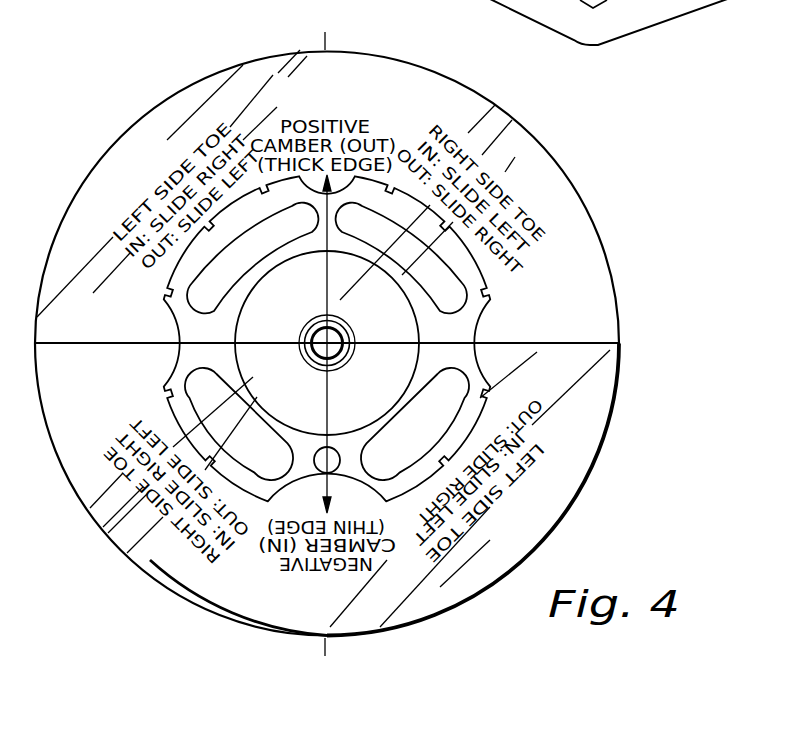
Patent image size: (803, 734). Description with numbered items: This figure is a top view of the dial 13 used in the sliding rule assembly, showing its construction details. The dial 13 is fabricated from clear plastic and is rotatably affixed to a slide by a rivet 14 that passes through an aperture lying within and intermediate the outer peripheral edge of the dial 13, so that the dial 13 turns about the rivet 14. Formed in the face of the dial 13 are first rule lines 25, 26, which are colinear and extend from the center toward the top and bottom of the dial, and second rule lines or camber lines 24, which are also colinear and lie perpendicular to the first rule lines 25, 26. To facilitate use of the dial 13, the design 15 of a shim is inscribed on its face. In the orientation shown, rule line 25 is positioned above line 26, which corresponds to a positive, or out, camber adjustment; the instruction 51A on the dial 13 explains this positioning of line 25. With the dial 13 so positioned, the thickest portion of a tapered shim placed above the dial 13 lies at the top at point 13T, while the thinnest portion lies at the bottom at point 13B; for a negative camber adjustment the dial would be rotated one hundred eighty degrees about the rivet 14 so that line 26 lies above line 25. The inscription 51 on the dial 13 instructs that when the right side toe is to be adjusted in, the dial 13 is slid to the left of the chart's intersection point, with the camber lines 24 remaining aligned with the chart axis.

The dial 13 is at (476, 80).
The top point of dial 13T is at (325, 41).
The bottom point of dial 13B is at (325, 650).
The inscription 51 is at (560, 207).
The instruction 51A is at (313, 98).
The rivet 14 is at (346, 333).
The design of a shim 15 is at (172, 291).
The second rule lines 24 is at (133, 346).
The first rule line 25 is at (309, 216).
The first rule line 26 is at (328, 403).